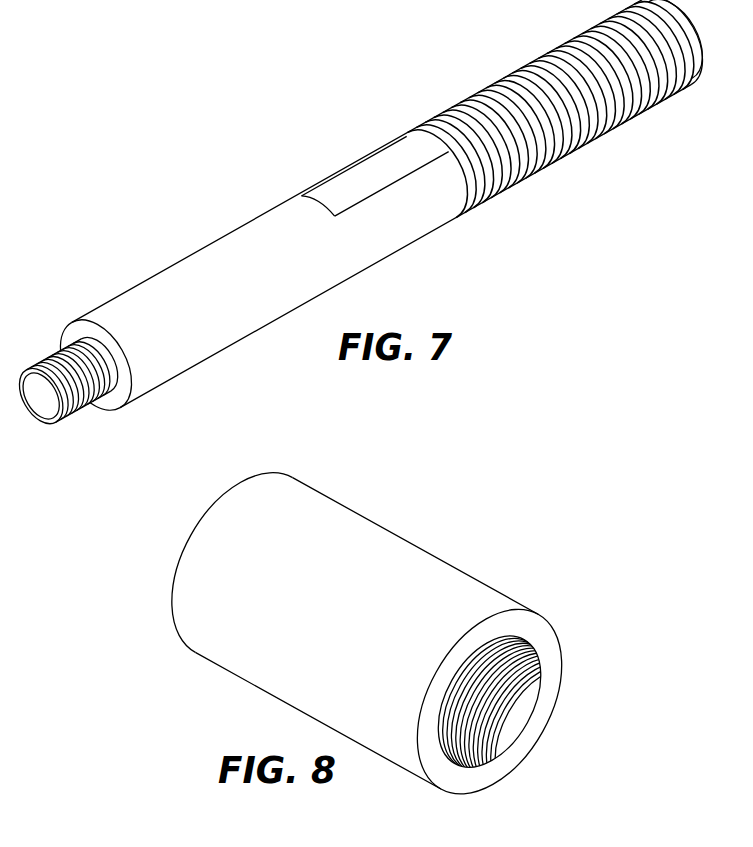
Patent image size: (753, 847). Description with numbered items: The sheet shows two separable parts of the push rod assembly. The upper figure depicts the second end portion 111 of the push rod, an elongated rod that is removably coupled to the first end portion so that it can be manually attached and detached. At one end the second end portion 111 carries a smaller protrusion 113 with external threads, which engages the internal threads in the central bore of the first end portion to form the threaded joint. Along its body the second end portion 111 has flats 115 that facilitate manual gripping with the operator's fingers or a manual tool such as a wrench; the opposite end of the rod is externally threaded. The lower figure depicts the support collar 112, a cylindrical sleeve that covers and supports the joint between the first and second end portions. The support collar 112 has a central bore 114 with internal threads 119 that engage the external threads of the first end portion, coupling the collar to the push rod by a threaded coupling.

In FIG. 7, the second end portion 111 is at (324, 168).
In FIG. 7, the protrusion 113 is at (90, 416).
In FIG. 7, the flats 115 is at (386, 158).
In FIG. 8, the support collar 112 is at (457, 545).
In FIG. 8, the central bore 114 is at (561, 723).
In FIG. 8, the internal threads 119 is at (530, 750).